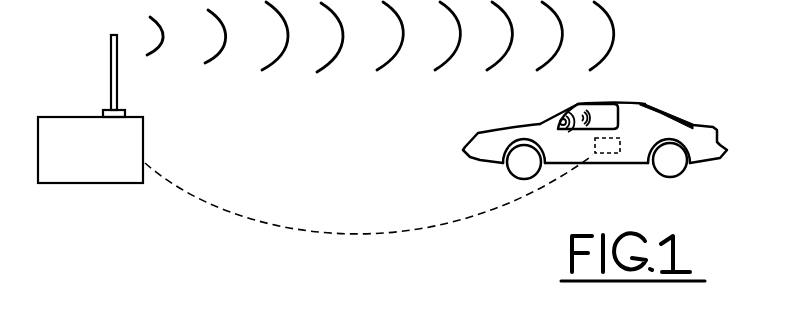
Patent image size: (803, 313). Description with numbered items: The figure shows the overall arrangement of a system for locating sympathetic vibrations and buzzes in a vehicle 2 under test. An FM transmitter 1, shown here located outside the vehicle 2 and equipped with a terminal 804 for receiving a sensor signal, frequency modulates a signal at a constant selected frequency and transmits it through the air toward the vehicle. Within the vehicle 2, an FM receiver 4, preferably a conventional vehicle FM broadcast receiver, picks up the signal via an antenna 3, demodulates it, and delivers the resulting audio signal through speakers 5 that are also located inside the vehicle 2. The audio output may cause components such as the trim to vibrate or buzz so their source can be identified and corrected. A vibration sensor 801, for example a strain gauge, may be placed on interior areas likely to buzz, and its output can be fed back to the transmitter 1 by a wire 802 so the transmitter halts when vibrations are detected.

The FM transmitter 1 is at (117, 183).
The vehicle 2 is at (722, 155).
The antenna 3 is at (693, 127).
The FM receiver 4 is at (574, 112).
The speakers 5 is at (565, 117).
The vibration sensor 801 is at (608, 153).
The wire 802 is at (438, 226).
The terminal 804 is at (143, 153).